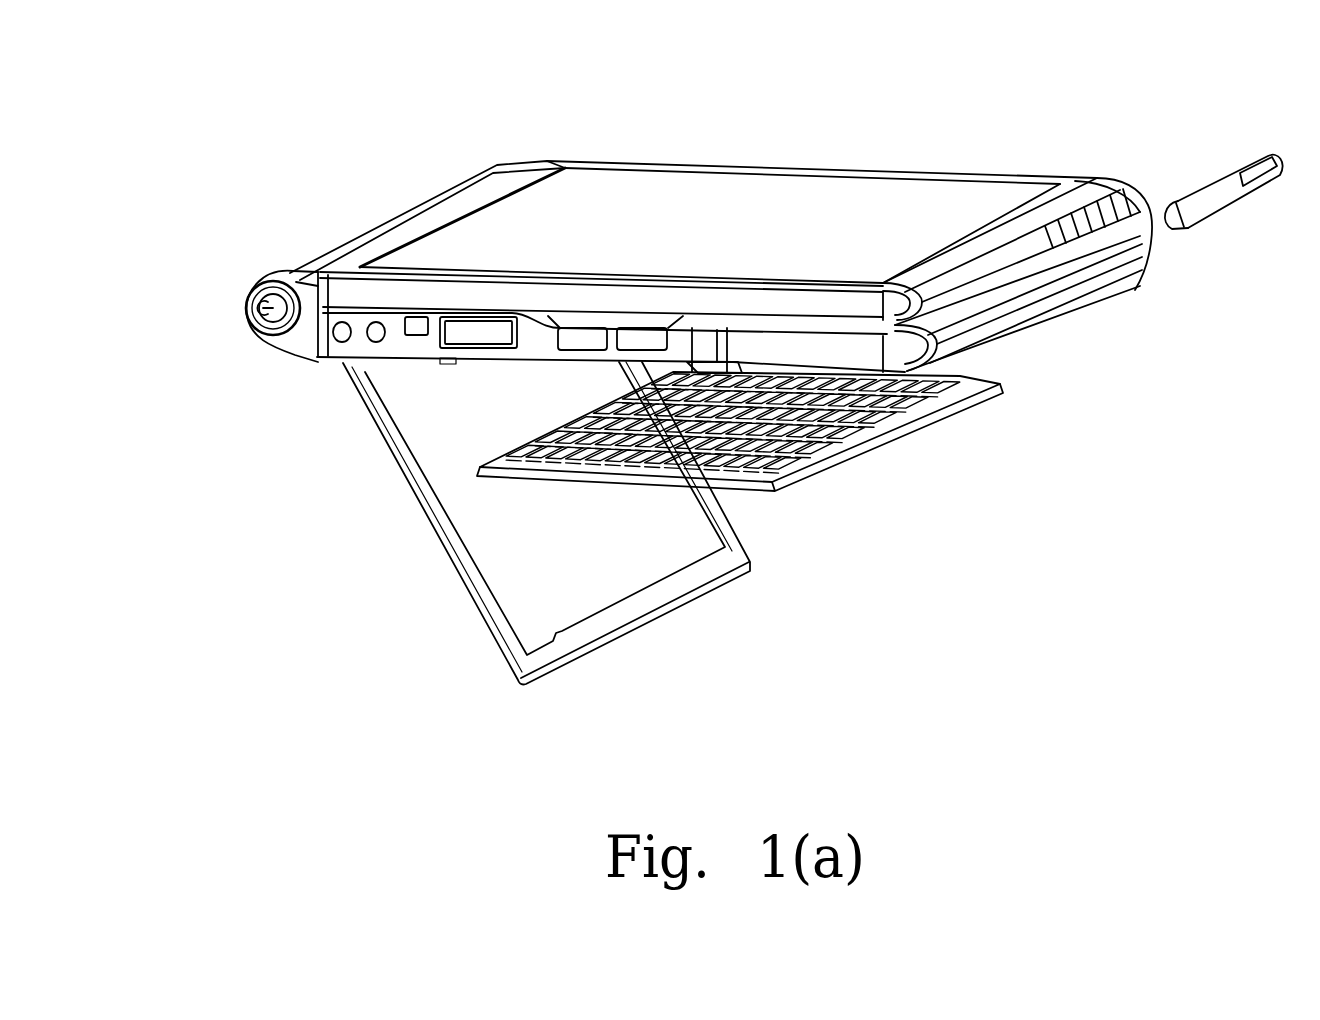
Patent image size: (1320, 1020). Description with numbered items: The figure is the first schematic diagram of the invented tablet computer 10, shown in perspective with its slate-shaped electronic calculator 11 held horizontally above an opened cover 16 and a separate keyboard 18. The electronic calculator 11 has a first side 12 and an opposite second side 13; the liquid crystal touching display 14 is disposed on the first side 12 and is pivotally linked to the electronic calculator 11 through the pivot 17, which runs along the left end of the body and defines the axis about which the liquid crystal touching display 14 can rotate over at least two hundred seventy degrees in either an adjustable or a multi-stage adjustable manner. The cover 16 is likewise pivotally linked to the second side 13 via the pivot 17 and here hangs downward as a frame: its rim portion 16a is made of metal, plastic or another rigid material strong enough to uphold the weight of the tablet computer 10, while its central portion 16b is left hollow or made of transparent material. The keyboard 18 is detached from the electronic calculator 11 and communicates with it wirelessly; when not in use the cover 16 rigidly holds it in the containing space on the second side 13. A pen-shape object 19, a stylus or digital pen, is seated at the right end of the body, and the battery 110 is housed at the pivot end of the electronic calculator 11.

The tablet computer 10 is at (168, 231).
The electronic calculator 11 is at (453, 205).
The first side 12 is at (1009, 179).
The second side 13 is at (447, 357).
The liquid crystal touching display 14 is at (675, 206).
The cover 16 is at (574, 549).
The rim portion 16a is at (707, 567).
The central portion 16b is at (512, 558).
The pivot 17 is at (250, 303).
The keyboard 18 is at (878, 445).
The pen-shape object 19 is at (1207, 203).
The battery 110 is at (292, 341).